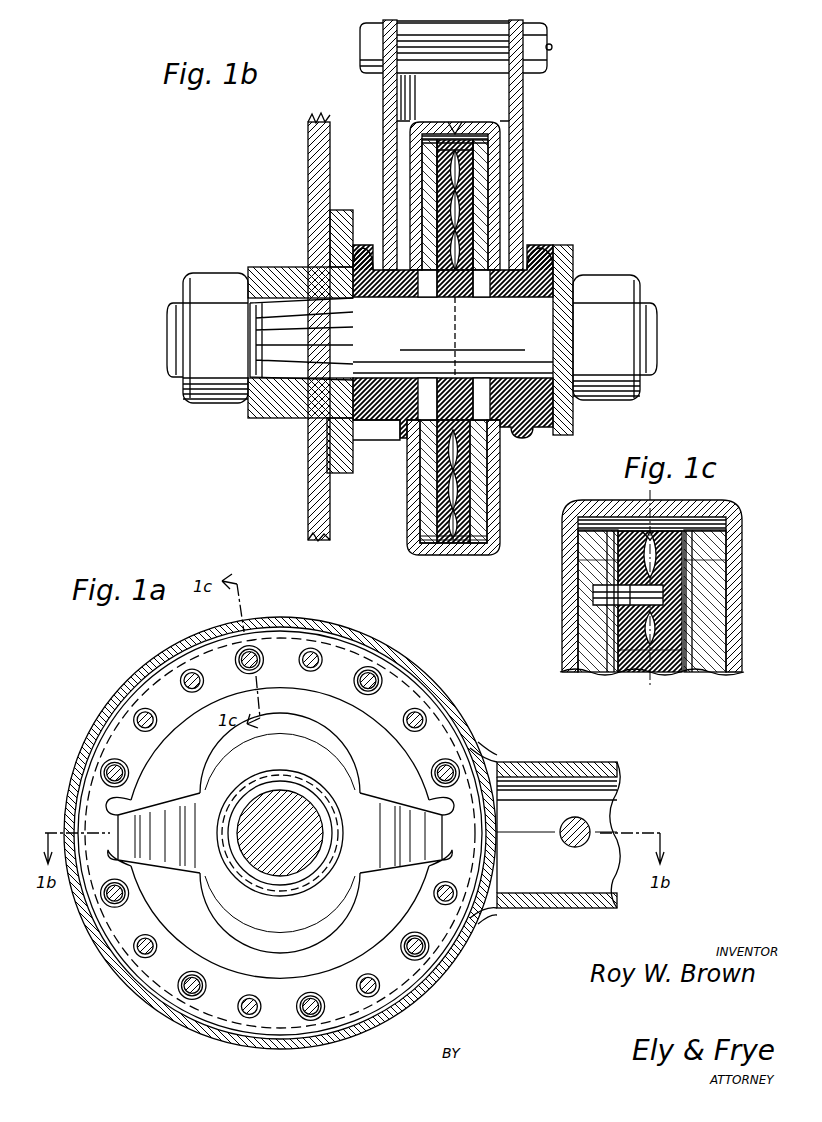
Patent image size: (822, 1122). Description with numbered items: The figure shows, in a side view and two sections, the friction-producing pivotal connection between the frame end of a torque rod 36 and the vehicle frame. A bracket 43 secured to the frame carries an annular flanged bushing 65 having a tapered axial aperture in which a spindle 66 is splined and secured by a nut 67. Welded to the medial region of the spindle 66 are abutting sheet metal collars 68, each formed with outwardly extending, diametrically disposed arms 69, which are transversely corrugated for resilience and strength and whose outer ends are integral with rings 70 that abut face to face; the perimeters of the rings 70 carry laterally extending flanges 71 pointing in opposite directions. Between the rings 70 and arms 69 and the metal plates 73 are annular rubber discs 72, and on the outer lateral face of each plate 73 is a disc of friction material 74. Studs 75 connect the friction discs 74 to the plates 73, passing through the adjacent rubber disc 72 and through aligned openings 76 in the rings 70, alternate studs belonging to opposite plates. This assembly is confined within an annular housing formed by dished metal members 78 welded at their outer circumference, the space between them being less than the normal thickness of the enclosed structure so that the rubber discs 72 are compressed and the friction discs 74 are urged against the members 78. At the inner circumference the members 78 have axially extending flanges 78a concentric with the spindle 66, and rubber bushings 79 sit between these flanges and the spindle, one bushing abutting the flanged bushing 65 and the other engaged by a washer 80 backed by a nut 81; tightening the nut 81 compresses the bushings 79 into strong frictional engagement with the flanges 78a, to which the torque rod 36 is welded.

In FIG. 1b, the torque rod 36 is at (523, 100).
In FIG. 1a, the torque rod 36 is at (555, 764).
In FIG. 1b, the bracket 43 is at (308, 145).
In FIG. 1b, the annular flanged bushing 65 is at (292, 418).
In FIG. 1b, the spindle 66 is at (655, 326).
In FIG. 1a, the spindle 66 is at (280, 878).
In FIG. 1b, the nut 67 is at (215, 398).
In FIG. 1b, the sheet metal collar 68 is at (430, 297).
In FIG. 1a, the sheet metal collar 68 is at (305, 806).
In FIG. 1b, the arm 69 is at (447, 297).
In FIG. 1a, the arm 69 is at (198, 860).
In FIG. 1b, the ring 70 is at (420, 165).
In FIG. 1c, the ring 70 is at (724, 552).
In FIG. 1a, the ring 70 is at (408, 690).
In FIG. 1b, the flange 71 is at (451, 134).
In FIG. 1c, the flange 71 is at (640, 530).
In FIG. 1a, the flange 71 is at (356, 1022).
In FIG. 1b, the rubber disc 72 is at (440, 202).
In FIG. 1c, the rubber disc 72 is at (636, 670).
In FIG. 1a, the rubber disc 72 is at (190, 935).
In FIG. 1b, the metal plate 73 is at (422, 522).
In FIG. 1c, the metal plate 73 is at (612, 670).
In FIG. 1b, the friction disc 74 is at (409, 490).
In FIG. 1c, the friction disc 74 is at (720, 640).
In FIG. 1b, the stud 75 is at (430, 162).
In FIG. 1c, the stud 75 is at (666, 594).
In FIG. 1a, the stud 75 is at (138, 712).
In FIG. 1c, the opening 76 is at (694, 614).
In FIG. 1a, the opening 76 is at (192, 670).
In FIG. 1b, the dished metal member 78 is at (418, 136).
In FIG. 1c, the dished metal member 78 is at (734, 660).
In FIG. 1a, the dished metal member 78 is at (236, 1048).
In FIG. 1b, the housing flange 78a is at (365, 247).
In FIG. 1b, the rubber bushing 79 is at (362, 436).
In FIG. 1b, the washer 80 is at (565, 433).
In FIG. 1b, the nut 81 is at (620, 394).